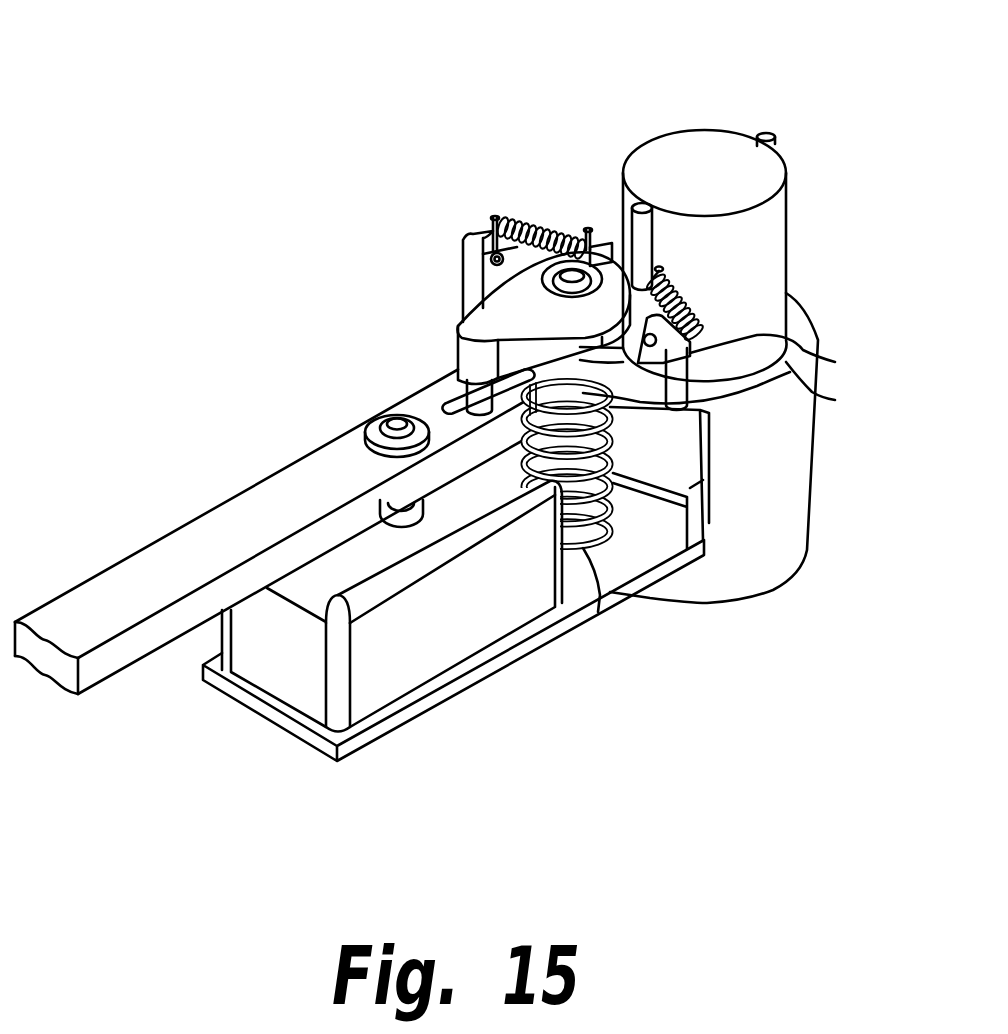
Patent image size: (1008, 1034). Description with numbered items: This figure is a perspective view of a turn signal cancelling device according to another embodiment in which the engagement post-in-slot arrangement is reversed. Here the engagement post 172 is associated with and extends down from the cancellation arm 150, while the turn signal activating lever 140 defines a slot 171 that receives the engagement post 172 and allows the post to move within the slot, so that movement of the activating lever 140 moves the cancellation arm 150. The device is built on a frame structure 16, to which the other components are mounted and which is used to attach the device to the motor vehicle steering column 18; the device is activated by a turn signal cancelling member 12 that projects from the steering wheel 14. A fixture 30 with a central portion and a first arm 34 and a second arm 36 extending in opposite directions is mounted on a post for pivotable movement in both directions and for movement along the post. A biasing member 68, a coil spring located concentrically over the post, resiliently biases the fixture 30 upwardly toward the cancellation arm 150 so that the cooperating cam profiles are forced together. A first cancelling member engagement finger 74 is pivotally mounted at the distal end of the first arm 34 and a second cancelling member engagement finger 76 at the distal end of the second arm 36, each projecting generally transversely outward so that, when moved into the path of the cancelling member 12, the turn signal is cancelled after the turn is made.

The turn signal cancelling member 12 is at (630, 228).
The steering wheel 14 is at (722, 128).
The frame structure 16 is at (543, 655).
The steering column 18 is at (815, 497).
The fixture 30 is at (672, 412).
The first arm 34 is at (462, 250).
The second arm 36 is at (770, 378).
The biasing member 68 is at (600, 605).
The first cancelling member engagement finger 74 is at (462, 297).
The second cancelling member engagement finger 76 is at (755, 337).
The turn signal activating lever 140 is at (230, 503).
The cancellation arm 150 is at (460, 328).
The slot 171 is at (446, 404).
The engagement post 172 is at (462, 384).